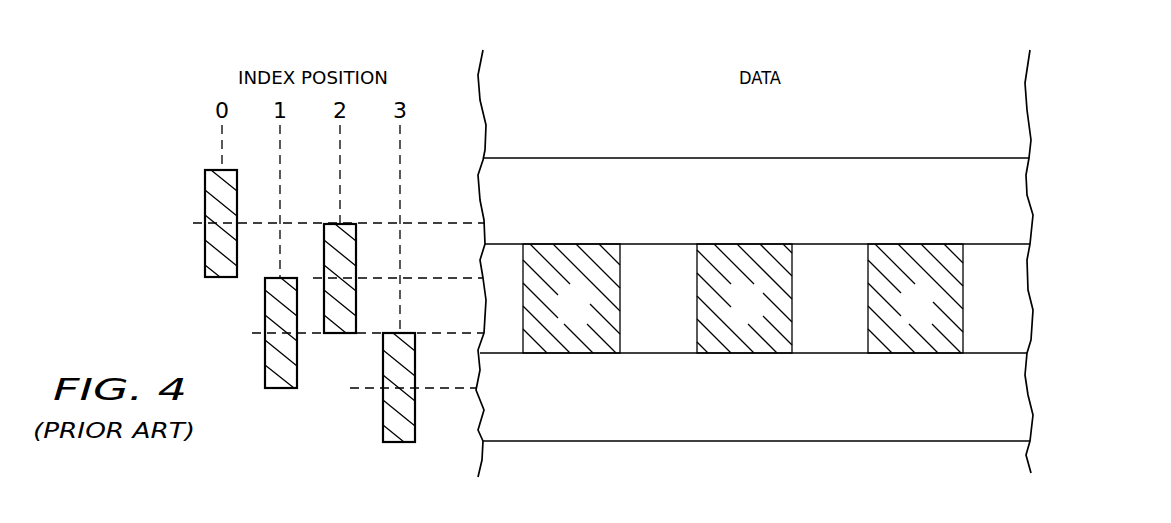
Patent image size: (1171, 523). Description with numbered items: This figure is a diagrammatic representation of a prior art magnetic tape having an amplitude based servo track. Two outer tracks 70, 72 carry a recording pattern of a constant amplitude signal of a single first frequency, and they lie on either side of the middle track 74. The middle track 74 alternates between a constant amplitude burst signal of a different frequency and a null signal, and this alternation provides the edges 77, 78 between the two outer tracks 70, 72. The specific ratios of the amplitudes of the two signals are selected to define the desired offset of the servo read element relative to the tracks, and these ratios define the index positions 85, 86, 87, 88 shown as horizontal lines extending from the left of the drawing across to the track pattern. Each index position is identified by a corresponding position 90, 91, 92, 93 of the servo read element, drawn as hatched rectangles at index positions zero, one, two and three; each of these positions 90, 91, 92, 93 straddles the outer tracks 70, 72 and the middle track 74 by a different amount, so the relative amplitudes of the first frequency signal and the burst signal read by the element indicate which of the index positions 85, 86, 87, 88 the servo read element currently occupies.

The outer track 70 is at (1027, 200).
The outer track 72 is at (1027, 398).
The middle track 74 is at (1058, 290).
The edge 77 is at (637, 244).
The edge 78 is at (850, 354).
The index position 85 is at (459, 223).
The index position 86 is at (437, 278).
The index position 87 is at (462, 333).
The index position 88 is at (455, 394).
The position of the servo read element 90 is at (217, 278).
The position of the servo read element 91 is at (277, 389).
The position of the servo read element 92 is at (340, 334).
The position of the servo read element 93 is at (400, 443).